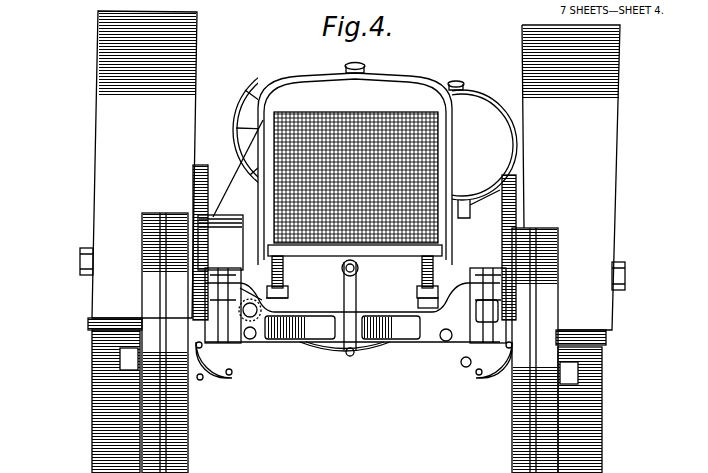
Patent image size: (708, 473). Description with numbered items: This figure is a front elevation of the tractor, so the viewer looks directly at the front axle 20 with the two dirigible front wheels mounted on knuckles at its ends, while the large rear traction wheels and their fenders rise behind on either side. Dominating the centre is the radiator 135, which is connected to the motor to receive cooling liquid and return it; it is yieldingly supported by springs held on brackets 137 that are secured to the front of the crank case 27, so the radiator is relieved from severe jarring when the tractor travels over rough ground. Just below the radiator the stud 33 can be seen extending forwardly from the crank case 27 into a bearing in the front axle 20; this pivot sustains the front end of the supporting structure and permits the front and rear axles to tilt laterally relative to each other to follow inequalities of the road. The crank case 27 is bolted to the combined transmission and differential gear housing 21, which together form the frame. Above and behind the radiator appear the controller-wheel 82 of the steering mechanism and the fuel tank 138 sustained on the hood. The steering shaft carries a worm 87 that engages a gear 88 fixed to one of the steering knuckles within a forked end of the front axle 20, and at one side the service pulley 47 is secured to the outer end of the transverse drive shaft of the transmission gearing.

The front axle 20 is at (395, 345).
The combined transmission and differential gear housing 21 is at (355, 299).
The crank case 27 is at (325, 352).
The stud 33 is at (342, 362).
The service pulley 47 is at (220, 242).
The controller-wheel 82 is at (258, 84).
The worm 87 is at (268, 302).
The gear 88 is at (290, 296).
The radiator 135 is at (355, 164).
The bracket 137 is at (417, 298).
The fuel tank 138 is at (462, 149).